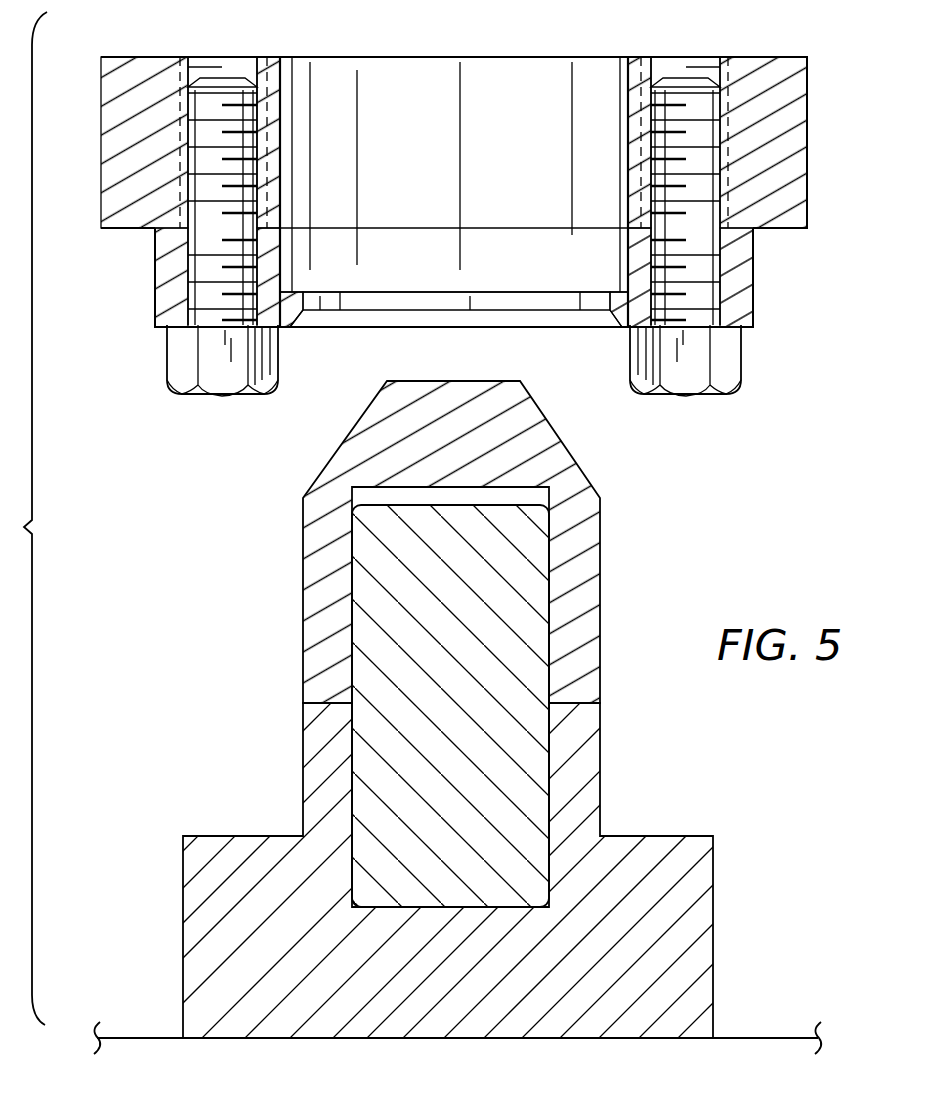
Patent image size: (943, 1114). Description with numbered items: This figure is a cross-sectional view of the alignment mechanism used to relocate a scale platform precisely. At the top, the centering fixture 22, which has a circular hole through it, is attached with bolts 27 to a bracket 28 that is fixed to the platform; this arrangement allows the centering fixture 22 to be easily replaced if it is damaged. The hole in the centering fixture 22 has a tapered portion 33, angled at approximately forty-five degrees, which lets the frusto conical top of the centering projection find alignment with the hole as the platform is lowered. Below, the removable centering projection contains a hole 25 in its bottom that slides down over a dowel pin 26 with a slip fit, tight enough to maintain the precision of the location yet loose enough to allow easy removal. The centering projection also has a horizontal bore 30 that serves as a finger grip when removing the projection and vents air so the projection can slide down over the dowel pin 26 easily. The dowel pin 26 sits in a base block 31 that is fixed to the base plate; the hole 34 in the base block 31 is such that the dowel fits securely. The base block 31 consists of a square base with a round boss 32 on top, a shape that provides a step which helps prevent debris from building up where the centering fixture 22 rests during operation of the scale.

The centering fixture 22 is at (155, 265).
The hole 25 is at (572, 487).
The dowel pin 26 is at (415, 598).
The bolts 27 is at (167, 353).
The bracket 28 is at (101, 120).
The horizontal bore 30 is at (468, 486).
The base block 31 is at (713, 908).
The round boss 32 is at (303, 768).
The tapered portion 33 is at (310, 327).
The hole 34 is at (565, 782).